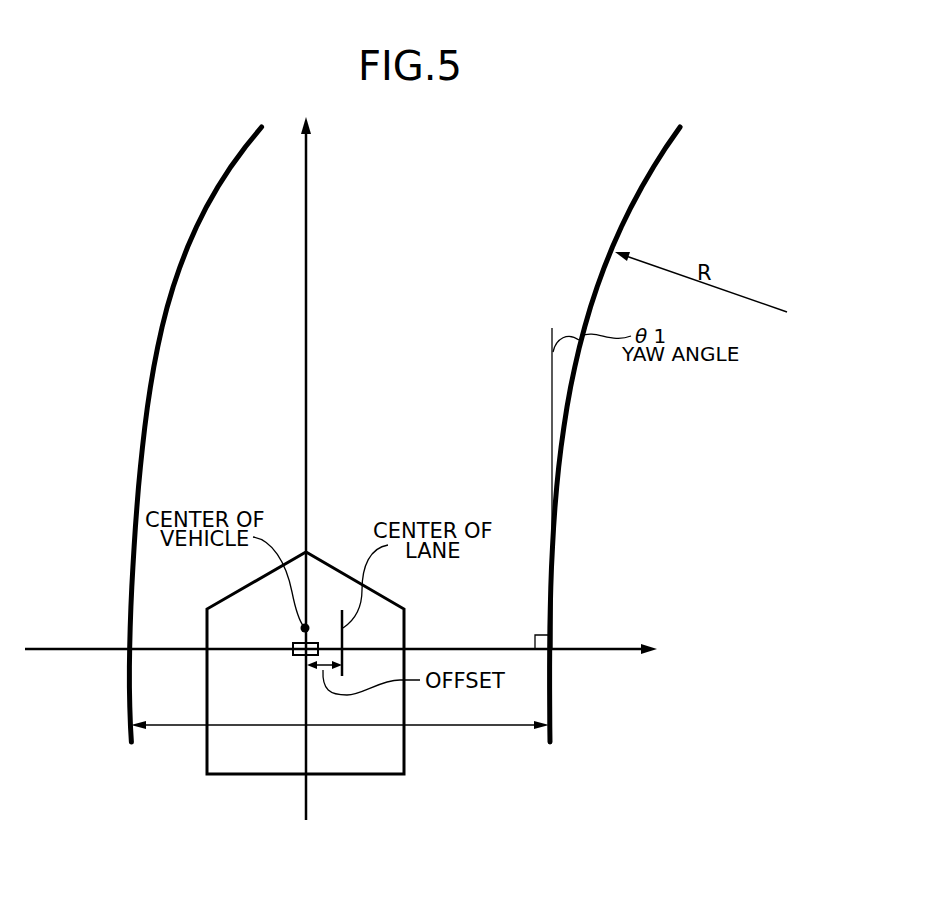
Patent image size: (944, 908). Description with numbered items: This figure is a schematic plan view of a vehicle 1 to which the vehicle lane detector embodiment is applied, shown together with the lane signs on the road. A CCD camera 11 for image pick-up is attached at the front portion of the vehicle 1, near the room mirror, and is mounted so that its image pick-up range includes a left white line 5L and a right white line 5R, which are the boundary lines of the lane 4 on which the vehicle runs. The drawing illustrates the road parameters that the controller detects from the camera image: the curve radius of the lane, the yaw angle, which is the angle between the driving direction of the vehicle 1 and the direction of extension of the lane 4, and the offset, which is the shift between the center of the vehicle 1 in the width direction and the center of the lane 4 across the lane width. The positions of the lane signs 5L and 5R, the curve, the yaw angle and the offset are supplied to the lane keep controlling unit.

The vehicle 1 is at (207, 757).
The lane 4 is at (388, 306).
The left white line 5L is at (223, 174).
The right white line 5R is at (638, 185).
The CCD camera 11 is at (292, 652).